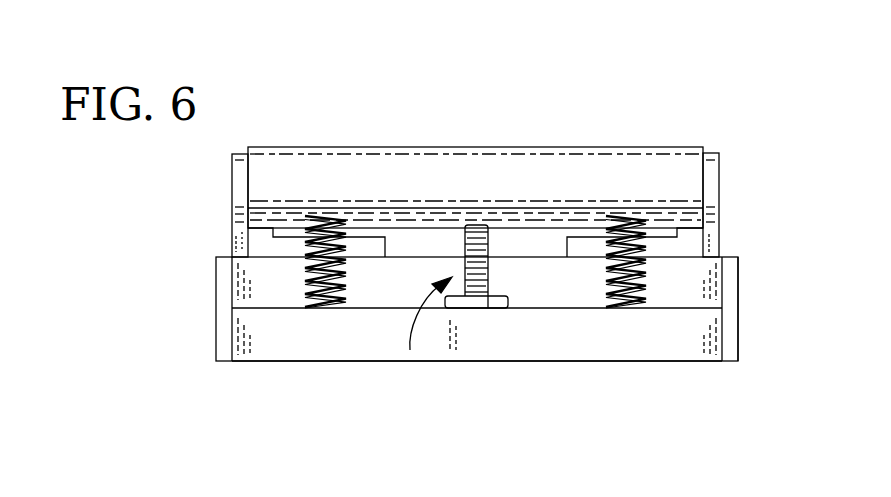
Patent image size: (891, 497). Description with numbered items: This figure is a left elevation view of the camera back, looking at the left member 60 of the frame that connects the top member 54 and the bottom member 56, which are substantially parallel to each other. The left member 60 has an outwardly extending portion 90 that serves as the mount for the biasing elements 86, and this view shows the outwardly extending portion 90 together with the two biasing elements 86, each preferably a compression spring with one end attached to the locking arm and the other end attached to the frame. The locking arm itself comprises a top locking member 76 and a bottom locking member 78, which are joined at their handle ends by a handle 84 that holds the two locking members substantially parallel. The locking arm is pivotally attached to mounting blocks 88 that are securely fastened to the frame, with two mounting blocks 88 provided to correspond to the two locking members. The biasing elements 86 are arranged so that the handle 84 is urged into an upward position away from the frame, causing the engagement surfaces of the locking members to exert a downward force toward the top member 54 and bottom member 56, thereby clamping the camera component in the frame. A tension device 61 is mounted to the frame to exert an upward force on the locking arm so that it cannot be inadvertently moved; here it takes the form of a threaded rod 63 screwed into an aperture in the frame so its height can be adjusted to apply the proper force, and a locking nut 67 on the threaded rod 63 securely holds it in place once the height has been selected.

The top member 54 is at (215, 280).
The bottom member 56 is at (738, 325).
The left member 60 is at (380, 297).
The tension device 61 is at (410, 350).
The threaded rod 63 is at (487, 273).
The locking nut 67 is at (478, 308).
The top locking member 76 is at (233, 205).
The bottom locking member 78 is at (720, 172).
The handle 84 is at (483, 175).
The biasing element 86 is at (303, 288).
The mounting block 88 is at (693, 238).
The outwardly extending portion 90 is at (263, 342).